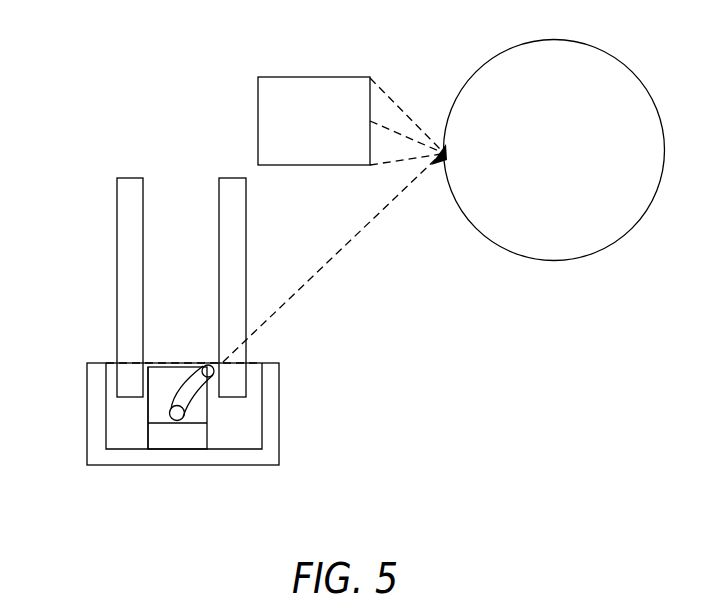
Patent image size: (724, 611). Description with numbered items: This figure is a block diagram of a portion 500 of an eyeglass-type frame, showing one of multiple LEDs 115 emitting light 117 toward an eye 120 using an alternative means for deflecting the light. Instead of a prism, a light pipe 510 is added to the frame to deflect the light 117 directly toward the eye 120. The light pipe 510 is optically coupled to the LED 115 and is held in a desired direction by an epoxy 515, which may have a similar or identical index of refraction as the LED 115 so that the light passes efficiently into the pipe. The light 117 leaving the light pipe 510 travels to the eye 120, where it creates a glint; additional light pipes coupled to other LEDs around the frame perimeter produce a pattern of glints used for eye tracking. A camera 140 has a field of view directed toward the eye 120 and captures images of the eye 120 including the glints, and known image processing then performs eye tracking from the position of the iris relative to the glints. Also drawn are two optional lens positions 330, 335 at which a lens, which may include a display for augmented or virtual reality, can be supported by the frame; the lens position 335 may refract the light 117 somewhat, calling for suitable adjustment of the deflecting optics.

The eye 120 is at (620, 67).
The camera 140 is at (318, 77).
The light 117 is at (337, 252).
The lens position 330 is at (117, 190).
The lens position 335 is at (219, 197).
The portion of frame 500 is at (87, 405).
The LED 115 is at (207, 434).
The epoxy 515 is at (148, 401).
The light pipe 510 is at (178, 398).